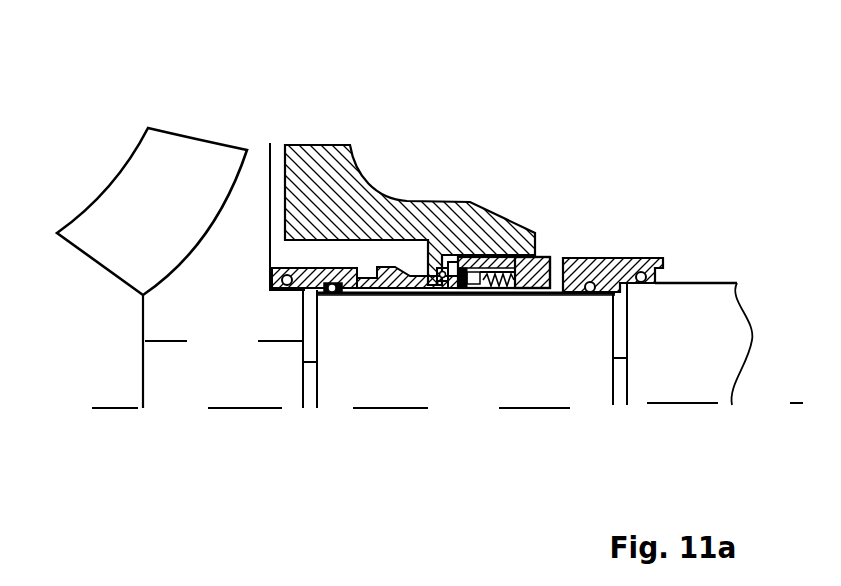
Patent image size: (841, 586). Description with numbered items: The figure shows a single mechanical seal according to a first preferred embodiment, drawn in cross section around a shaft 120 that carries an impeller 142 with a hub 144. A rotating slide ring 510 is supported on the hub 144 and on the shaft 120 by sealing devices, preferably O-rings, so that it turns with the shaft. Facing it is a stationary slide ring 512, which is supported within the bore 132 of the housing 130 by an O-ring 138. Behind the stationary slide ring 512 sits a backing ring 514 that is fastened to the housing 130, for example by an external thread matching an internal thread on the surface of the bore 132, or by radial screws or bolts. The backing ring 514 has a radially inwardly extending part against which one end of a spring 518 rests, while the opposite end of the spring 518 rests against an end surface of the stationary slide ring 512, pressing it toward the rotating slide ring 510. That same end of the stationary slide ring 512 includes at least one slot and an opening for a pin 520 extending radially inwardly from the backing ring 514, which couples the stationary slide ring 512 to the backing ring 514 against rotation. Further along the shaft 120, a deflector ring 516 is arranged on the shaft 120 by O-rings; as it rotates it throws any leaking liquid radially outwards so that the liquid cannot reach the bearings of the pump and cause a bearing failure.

The rotating slide ring 510 is at (302, 268).
The housing 130 is at (322, 213).
The bore 132 is at (375, 240).
The stationary slide ring 512 is at (398, 265).
The O-ring 138 is at (450, 260).
The spring 518 is at (497, 257).
The backing ring 514 is at (538, 253).
The deflector ring 516 is at (608, 258).
The pin 520 is at (488, 288).
The impeller 142 is at (183, 268).
The hub 144 is at (212, 395).
The shaft 120 is at (428, 393).